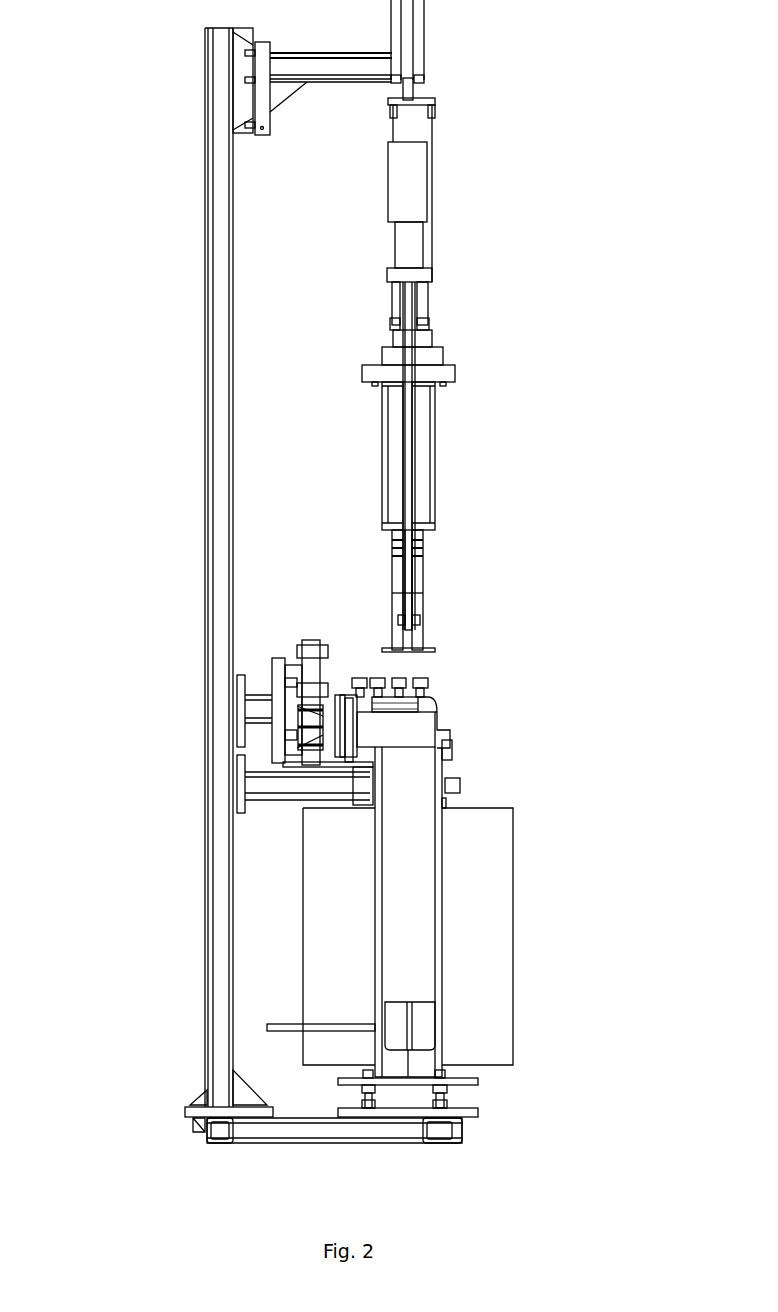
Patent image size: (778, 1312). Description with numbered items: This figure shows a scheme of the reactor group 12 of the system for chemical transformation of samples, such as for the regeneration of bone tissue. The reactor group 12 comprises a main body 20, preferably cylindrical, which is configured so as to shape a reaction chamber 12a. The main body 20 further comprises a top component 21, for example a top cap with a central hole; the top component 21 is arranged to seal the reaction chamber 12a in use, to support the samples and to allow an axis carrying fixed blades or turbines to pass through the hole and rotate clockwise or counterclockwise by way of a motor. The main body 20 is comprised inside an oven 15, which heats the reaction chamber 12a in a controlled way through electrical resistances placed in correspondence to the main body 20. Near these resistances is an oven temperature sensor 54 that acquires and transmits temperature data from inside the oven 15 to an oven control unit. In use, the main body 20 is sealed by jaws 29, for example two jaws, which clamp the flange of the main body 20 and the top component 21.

The reactor group 12 is at (495, 228).
The reaction chamber 12a is at (422, 846).
The oven 15 is at (470, 1035).
The main body 20 is at (440, 916).
The top component 21 is at (425, 435).
The jaws 29 is at (440, 703).
The oven temperature sensor 54 is at (297, 1025).